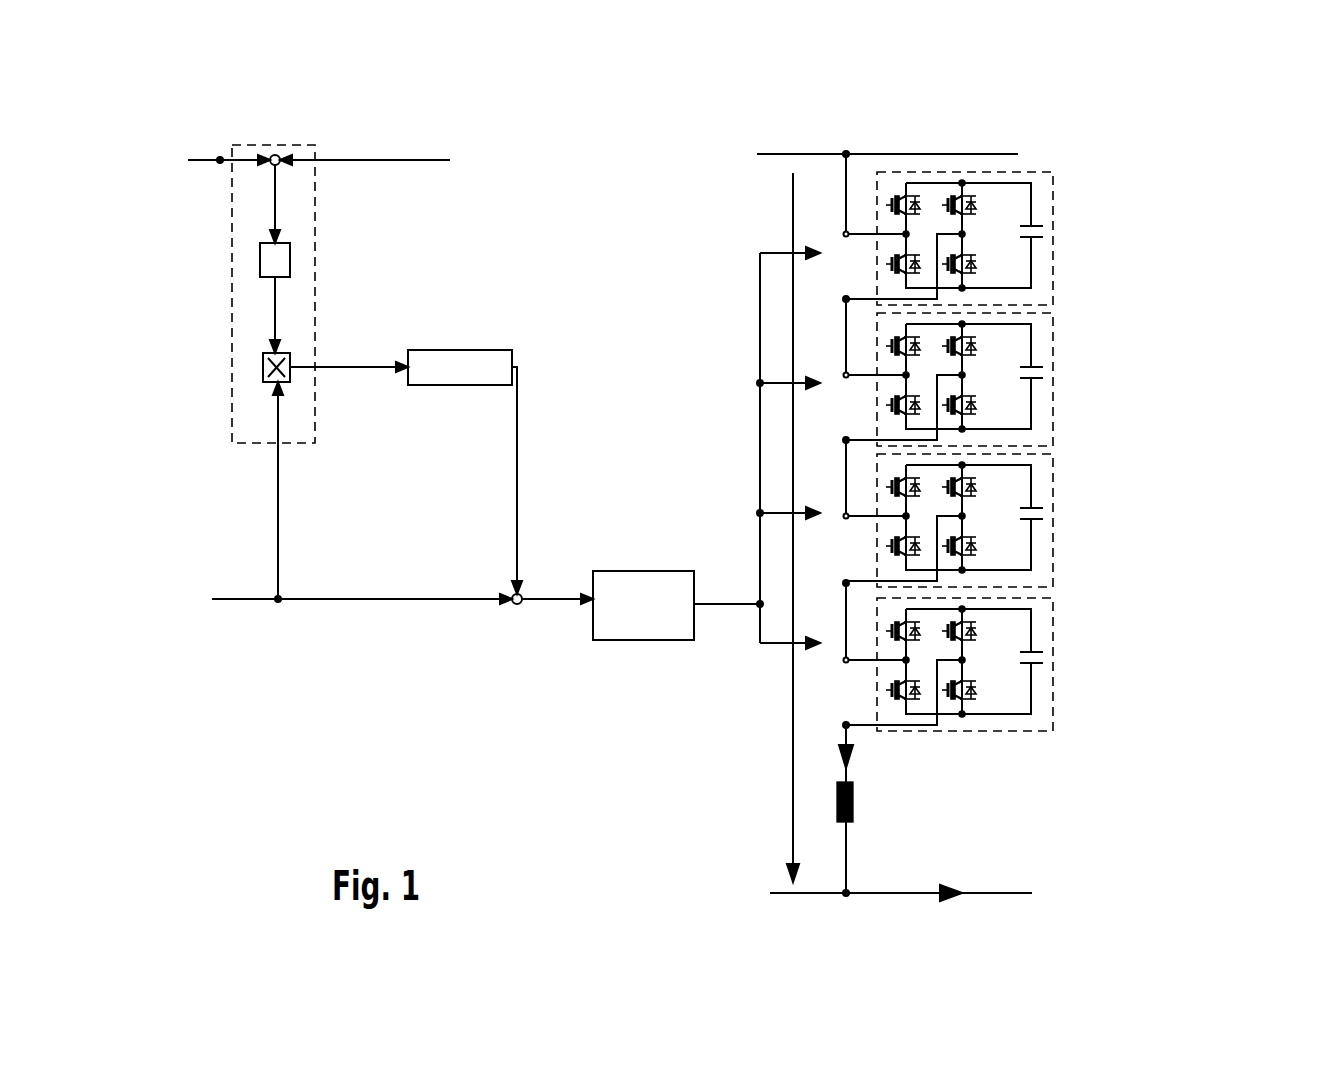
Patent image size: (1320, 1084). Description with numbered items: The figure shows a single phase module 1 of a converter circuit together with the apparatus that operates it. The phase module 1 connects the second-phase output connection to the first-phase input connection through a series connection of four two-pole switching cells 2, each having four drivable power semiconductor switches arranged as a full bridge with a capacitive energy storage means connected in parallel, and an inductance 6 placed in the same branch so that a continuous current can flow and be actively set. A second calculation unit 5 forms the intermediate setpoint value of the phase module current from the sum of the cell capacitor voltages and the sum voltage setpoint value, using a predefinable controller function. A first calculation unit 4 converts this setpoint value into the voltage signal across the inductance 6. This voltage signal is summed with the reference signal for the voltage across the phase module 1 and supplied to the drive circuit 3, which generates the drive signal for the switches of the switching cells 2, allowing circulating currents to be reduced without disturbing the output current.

The phase module 1 is at (1116, 660).
The switching cell 2 is at (1046, 172).
The drive circuit 3 is at (461, 577).
The first calculation unit 4 is at (418, 472).
The second calculation unit 5 is at (317, 222).
The inductance 6 is at (853, 813).